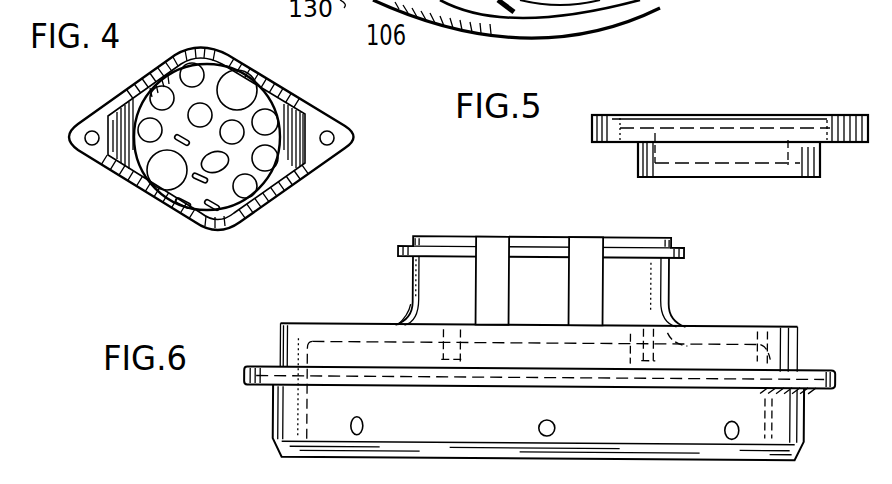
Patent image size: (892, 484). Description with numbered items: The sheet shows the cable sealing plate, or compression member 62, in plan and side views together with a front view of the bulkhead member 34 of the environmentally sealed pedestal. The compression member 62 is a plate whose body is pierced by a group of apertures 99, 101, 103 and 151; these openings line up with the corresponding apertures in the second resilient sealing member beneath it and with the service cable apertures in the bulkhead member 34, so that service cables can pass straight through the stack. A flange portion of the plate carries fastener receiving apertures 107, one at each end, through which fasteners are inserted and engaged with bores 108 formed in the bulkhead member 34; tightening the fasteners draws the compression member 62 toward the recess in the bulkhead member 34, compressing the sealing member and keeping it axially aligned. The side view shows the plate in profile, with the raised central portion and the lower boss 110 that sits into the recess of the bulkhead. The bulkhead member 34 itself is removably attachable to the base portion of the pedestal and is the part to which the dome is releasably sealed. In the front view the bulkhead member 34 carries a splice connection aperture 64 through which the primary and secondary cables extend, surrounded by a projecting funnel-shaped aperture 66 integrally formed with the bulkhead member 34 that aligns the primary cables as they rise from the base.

In FIG. 6, the bulkhead member 34 is at (255, 401).
In FIG. 4, the compression member 62 is at (103, 114).
In FIG. 5, the compression member 62 is at (649, 102).
In FIG. 6, the splice connection aperture 64 is at (424, 284).
In FIG. 6, the funnel-shaped aperture 66 is at (410, 300).
In FIG. 4, the aperture 99 is at (240, 88).
In FIG. 4, the aperture 101 is at (250, 188).
In FIG. 4, the aperture 103 is at (208, 208).
In FIG. 4, the fastener receiving aperture 107 is at (89, 145).
In FIG. 5, the fastener receiving aperture 107 is at (852, 142).
In FIG. 4, the bore 108 is at (98, 118).
In FIG. 5, the bore 108 is at (838, 122).
In FIG. 5, the boss 110 is at (765, 170).
In FIG. 4, the aperture 151 is at (193, 76).